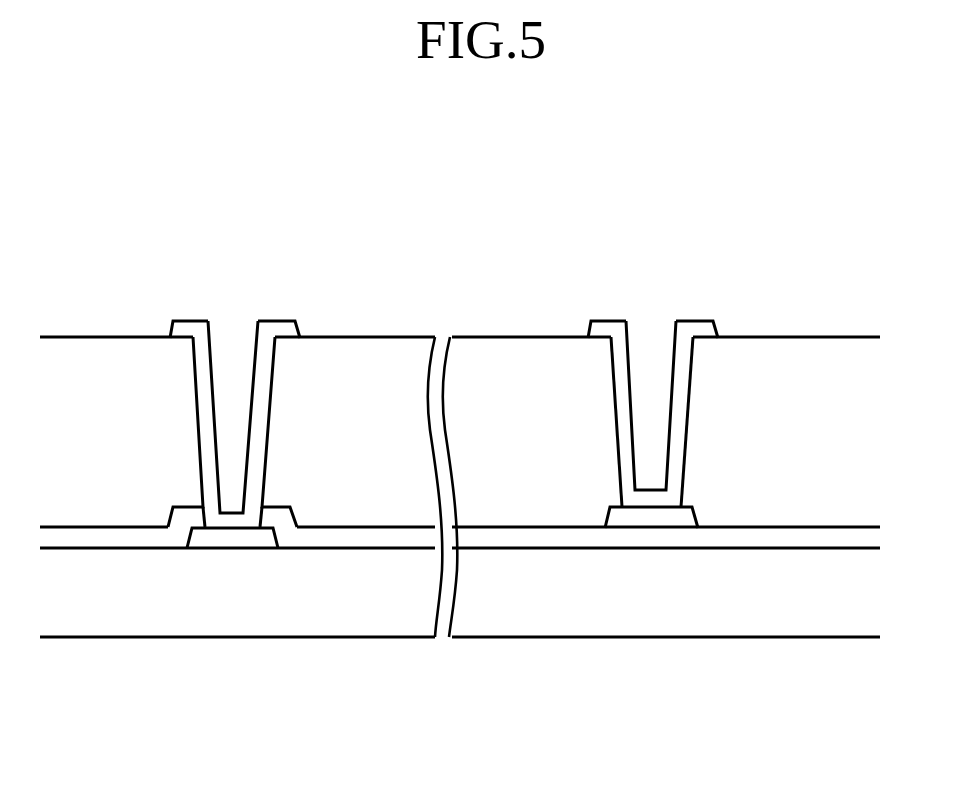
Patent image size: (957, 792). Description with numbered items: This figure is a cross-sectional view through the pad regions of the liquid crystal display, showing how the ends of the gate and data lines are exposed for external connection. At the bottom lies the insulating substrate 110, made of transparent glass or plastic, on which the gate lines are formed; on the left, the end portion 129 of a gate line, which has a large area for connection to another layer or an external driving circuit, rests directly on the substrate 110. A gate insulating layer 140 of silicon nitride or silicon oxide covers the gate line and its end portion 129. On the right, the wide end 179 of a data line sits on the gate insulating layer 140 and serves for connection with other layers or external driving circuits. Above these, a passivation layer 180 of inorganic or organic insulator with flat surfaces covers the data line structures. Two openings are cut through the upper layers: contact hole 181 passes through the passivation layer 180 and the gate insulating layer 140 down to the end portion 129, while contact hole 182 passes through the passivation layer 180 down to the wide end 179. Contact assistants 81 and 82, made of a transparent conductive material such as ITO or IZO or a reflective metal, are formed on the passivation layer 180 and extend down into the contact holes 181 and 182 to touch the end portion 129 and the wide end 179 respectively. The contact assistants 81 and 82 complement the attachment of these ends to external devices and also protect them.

The contact assistant 81 is at (185, 328).
The contact assistant 82 is at (603, 328).
The contact hole 181 is at (272, 397).
The contact hole 182 is at (690, 397).
The passivation layer 180 is at (362, 447).
The gate insulating layer 140 is at (112, 538).
The end portion 129 is at (233, 538).
The wide end 179 is at (653, 517).
The insulating substrate 110 is at (753, 598).